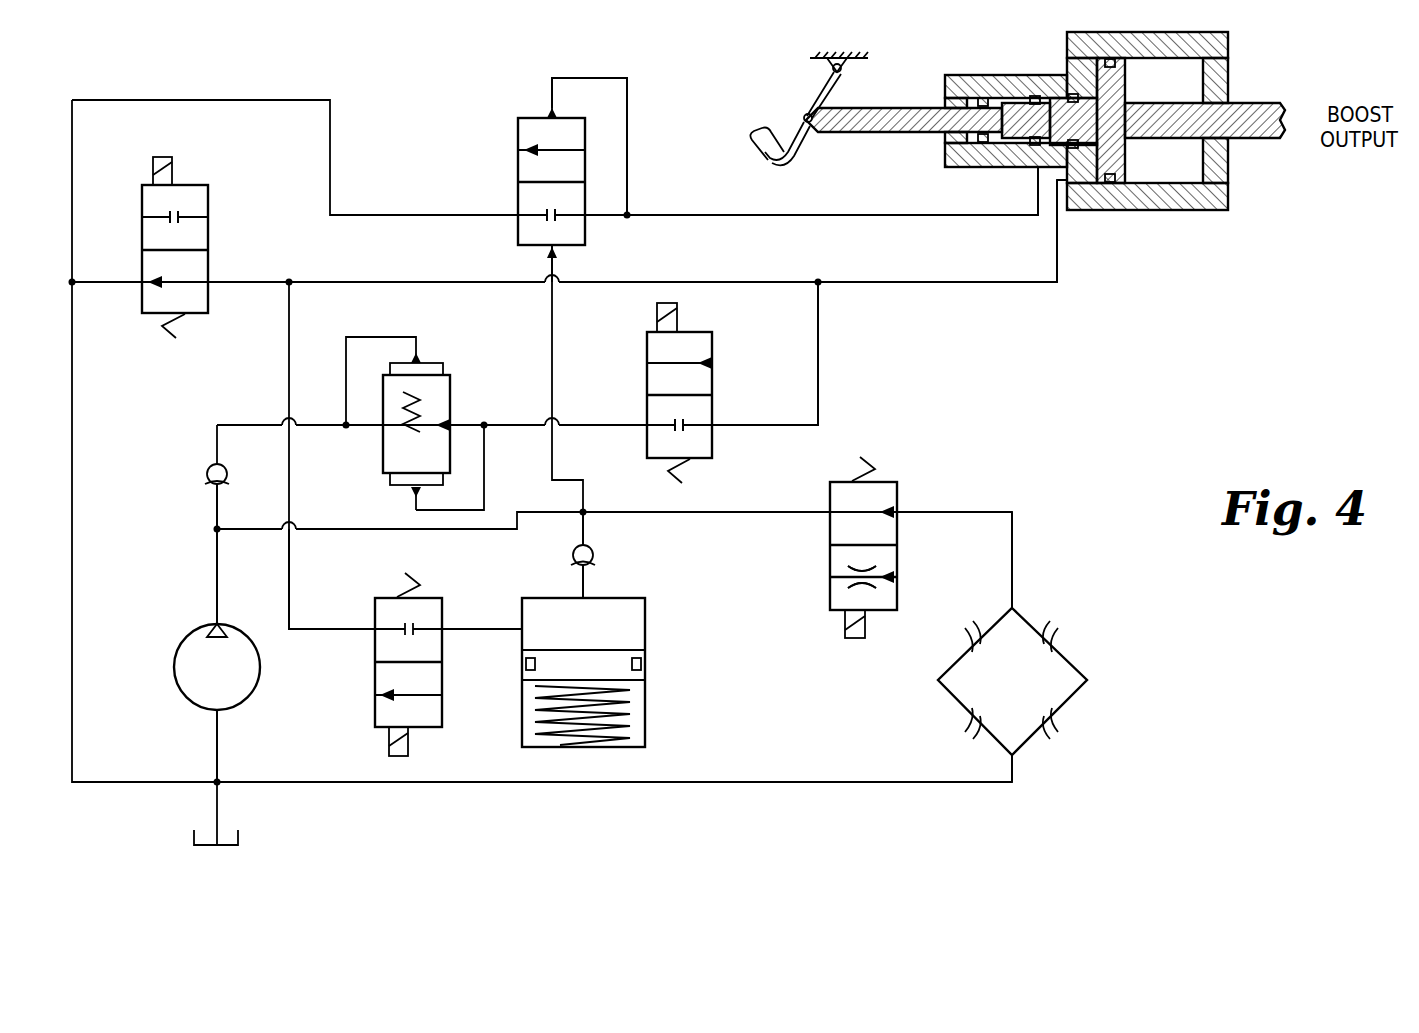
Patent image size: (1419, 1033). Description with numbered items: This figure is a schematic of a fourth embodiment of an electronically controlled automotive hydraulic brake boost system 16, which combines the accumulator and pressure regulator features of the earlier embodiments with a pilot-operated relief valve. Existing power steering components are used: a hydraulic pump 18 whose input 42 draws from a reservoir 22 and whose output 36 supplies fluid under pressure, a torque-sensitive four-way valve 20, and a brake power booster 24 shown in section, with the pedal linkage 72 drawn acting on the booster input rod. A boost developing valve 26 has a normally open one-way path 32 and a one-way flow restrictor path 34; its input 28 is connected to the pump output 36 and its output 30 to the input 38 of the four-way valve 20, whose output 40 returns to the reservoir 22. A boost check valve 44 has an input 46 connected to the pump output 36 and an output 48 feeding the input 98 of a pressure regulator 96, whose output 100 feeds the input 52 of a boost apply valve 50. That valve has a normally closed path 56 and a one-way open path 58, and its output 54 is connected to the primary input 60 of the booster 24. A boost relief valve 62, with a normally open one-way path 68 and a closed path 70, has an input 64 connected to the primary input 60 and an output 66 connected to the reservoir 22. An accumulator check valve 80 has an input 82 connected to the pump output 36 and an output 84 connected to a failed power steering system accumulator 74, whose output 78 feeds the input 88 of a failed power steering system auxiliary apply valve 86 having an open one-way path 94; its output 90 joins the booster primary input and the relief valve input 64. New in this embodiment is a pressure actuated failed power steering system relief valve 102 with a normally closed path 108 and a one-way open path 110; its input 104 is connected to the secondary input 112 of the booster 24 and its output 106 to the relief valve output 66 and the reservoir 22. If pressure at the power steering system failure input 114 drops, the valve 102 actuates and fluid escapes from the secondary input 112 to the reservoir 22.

The electronically controlled automotive hydraulic brake boost system 16 is at (1130, 425).
The hydraulic pump 18 is at (185, 640).
The torque-sensitive four-way valve 20 is at (1072, 662).
The reservoir 22 is at (238, 845).
The brake power booster 24 is at (1168, 210).
The boost developing valve 26 is at (890, 482).
The input of boost developing valve 28 is at (808, 512).
The output of boost developing valve 30 is at (925, 512).
The normally open one-way path 32 is at (888, 520).
The one-way flow restrictor path 34 is at (890, 580).
The output of hydraulic pump 36 is at (217, 590).
The input of torque-sensitive four-way valve 38 is at (1012, 552).
The output of torque-sensitive four-way valve 40 is at (1012, 782).
The input of hydraulic pump 42 is at (217, 745).
The boost check valve 44 is at (208, 468).
The input of boost check valve 46 is at (217, 505).
The output of boost check valve 48 is at (217, 432).
The boost apply valve 50 is at (695, 332).
The input of boost apply valve 52 is at (618, 425).
The output of boost apply valve 54 is at (750, 425).
The normally closed path 56 is at (660, 363).
The one-way open path 58 is at (660, 425).
The primary input of brake power booster 60 is at (1060, 232).
The boost relief valve 62 is at (200, 185).
The input of boost relief valve 64 is at (258, 282).
The output of boost relief valve 66 is at (120, 282).
The normally open one-way path 68 is at (192, 282).
The closed path 70 is at (145, 217).
The brake pedal 72 is at (795, 152).
The failed power steering system accumulator 74 is at (645, 626).
The output of accumulator 78 is at (505, 629).
The accumulator check valve 80 is at (595, 562).
The input of accumulator check valve 82 is at (590, 530).
The output of accumulator check valve 84 is at (573, 560).
The failed power steering system auxiliary apply valve 86 is at (430, 598).
The input of auxiliary apply valve 88 is at (460, 629).
The output of auxiliary apply valve 90 is at (310, 629).
The open one-way path 94 is at (440, 700).
The pressure regulator 96 is at (446, 375).
The input of pressure regulator 98 is at (357, 425).
The output of pressure regulator 100 is at (460, 425).
The failed power steering system relief valve 102 is at (535, 118).
The input of failed power steering system relief valve 104 is at (627, 215).
The output of failed power steering system relief valve 106 is at (505, 215).
The normally closed path 108 is at (540, 215).
The one-way open path 110 is at (535, 150).
The secondary input of brake power booster 112 is at (938, 215).
The power steering system failure input 114 is at (548, 270).